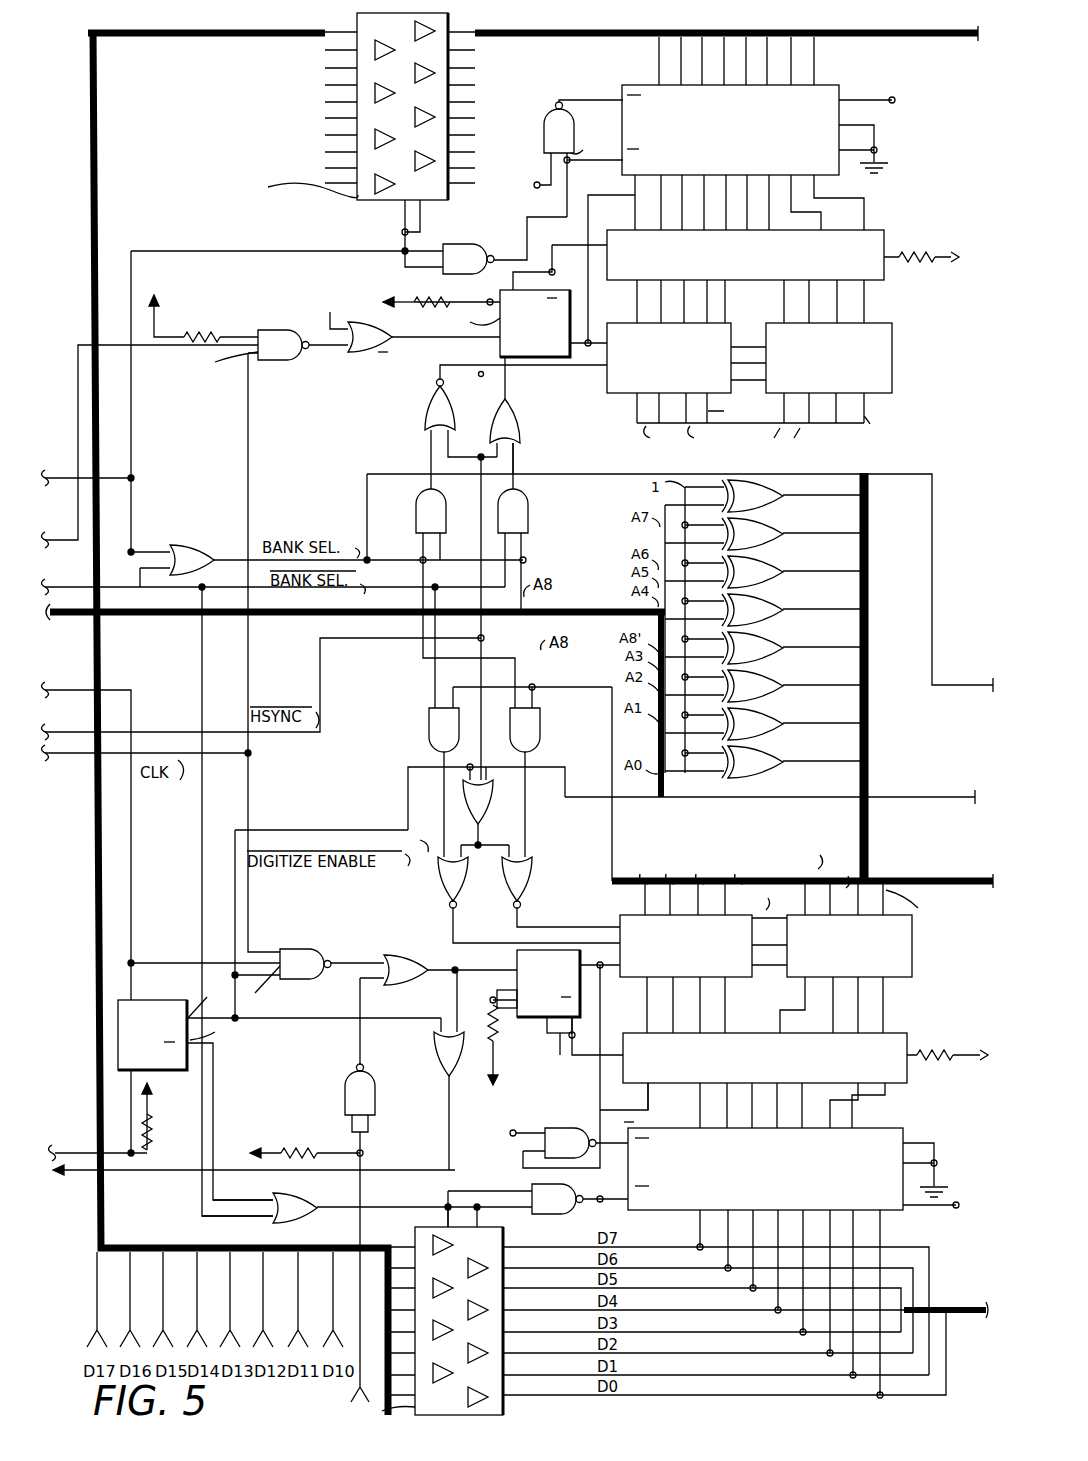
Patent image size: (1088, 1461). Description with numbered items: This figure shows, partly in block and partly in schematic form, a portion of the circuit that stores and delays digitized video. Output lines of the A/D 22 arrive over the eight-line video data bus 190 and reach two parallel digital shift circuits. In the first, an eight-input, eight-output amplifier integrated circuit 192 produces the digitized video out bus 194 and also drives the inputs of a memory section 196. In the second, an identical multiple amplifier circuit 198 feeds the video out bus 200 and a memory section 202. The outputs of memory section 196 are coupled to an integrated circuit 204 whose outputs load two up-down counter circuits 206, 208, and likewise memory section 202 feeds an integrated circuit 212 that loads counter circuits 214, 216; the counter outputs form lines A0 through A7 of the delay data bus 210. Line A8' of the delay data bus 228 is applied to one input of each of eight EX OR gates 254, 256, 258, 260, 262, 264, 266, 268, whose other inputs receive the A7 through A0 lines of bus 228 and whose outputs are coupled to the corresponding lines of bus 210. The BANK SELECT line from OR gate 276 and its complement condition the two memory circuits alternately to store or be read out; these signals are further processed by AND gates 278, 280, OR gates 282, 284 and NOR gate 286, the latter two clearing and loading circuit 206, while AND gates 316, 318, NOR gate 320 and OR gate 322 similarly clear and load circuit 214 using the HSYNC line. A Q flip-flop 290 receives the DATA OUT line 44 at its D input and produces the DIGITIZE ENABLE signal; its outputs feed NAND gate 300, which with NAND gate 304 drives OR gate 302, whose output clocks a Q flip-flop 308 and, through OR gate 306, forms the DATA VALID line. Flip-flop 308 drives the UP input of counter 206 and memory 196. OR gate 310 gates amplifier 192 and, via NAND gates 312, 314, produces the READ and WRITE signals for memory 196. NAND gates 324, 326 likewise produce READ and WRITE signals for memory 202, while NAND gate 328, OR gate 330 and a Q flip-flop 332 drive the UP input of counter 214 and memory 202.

The A/D 22 is at (910, 1147).
The DATA OUT line 44 is at (65, 1153).
The video data bus 190 is at (88, 242).
The amplifier integrated circuit 192 is at (508, 1412).
The video out bus 194 is at (954, 1309).
The memory section 196 is at (908, 1135).
The multiple amplifier circuit 198 is at (347, 204).
The video out bus 200 is at (869, 37).
The memory section 202 is at (907, 132).
The integrated circuit 204 is at (889, 1047).
The integrated circuit 206 is at (660, 962).
The integrated circuit 208 is at (886, 958).
The delay data bus 210 is at (960, 873).
The integrated circuit 212 is at (893, 229).
The integrated circuit 214 is at (611, 405).
The integrated circuit 216 is at (910, 400).
The delay data bus 228 is at (294, 616).
The EX OR gate 254 is at (773, 505).
The EX OR gate 256 is at (773, 543).
The EX OR gate 258 is at (773, 581).
The EX OR gate 260 is at (773, 619).
The EX OR gate 262 is at (773, 657).
The EX OR gate 264 is at (773, 695).
The EX OR gate 266 is at (773, 733).
The EX OR gate 268 is at (773, 771).
The OR gate 276 is at (196, 545).
The AND gate 278 is at (436, 724).
The AND gate 280 is at (518, 730).
The OR gate 282 is at (483, 798).
The OR gate 284 is at (527, 878).
The NOR gate 286 is at (440, 878).
The Q flip-flop 290 is at (157, 1053).
The NAND gate 300 is at (297, 945).
The OR gate 302 is at (408, 950).
The NAND gate 304 is at (350, 1096).
The OR gate 306 is at (432, 1082).
The Q flip-flop 308 is at (535, 968).
The OR gate 310 is at (294, 1205).
The NAND gate 312 is at (560, 1217).
The NAND gate 314 is at (572, 1130).
The AND gate 316 is at (420, 508).
The AND gate 318 is at (526, 505).
The NOR gate 320 is at (428, 403).
The OR gate 322 is at (518, 418).
The NAND gate 324 is at (470, 238).
The NAND gate 326 is at (553, 135).
The NAND gate 328 is at (283, 360).
The OR gate 330 is at (390, 352).
The Q flip-flop 332 is at (498, 352).